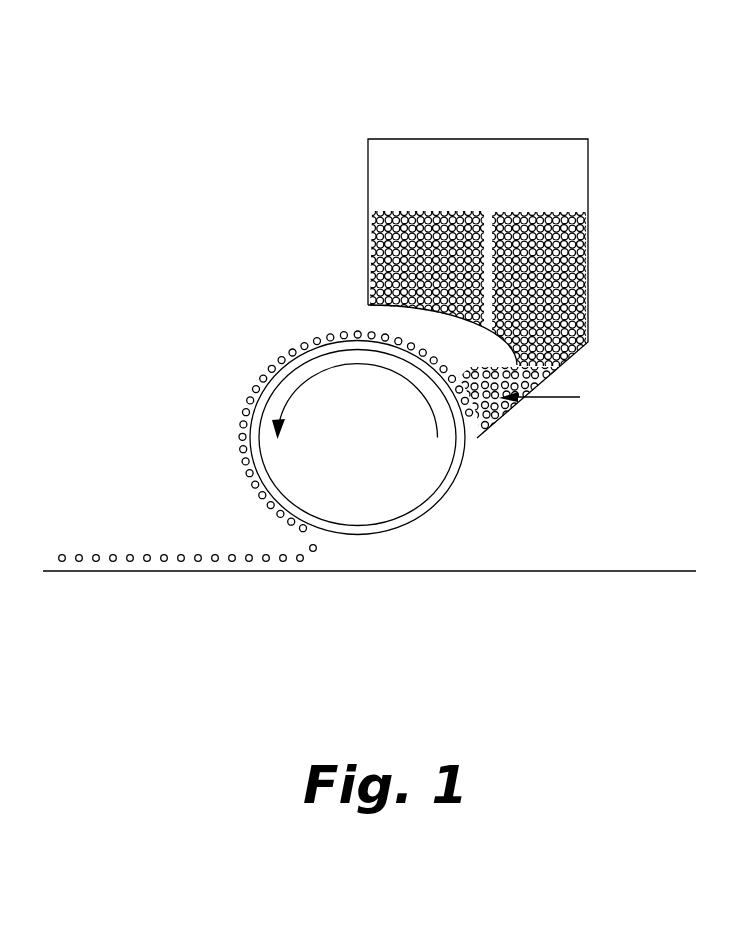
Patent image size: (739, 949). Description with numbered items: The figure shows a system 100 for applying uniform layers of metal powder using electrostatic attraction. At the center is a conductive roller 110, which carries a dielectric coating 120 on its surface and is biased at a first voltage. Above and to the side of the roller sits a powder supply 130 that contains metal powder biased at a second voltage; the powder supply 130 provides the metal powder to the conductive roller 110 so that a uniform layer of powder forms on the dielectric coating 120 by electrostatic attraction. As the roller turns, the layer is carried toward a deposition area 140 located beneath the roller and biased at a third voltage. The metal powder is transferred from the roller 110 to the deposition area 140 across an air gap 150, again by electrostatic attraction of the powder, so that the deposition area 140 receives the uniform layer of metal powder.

The system 100 is at (419, 88).
The conductive roller 110 is at (380, 452).
The dielectric coating 120 is at (240, 394).
The powder supply 130 is at (500, 184).
The deposition area 140 is at (380, 627).
The air gap 150 is at (373, 563).